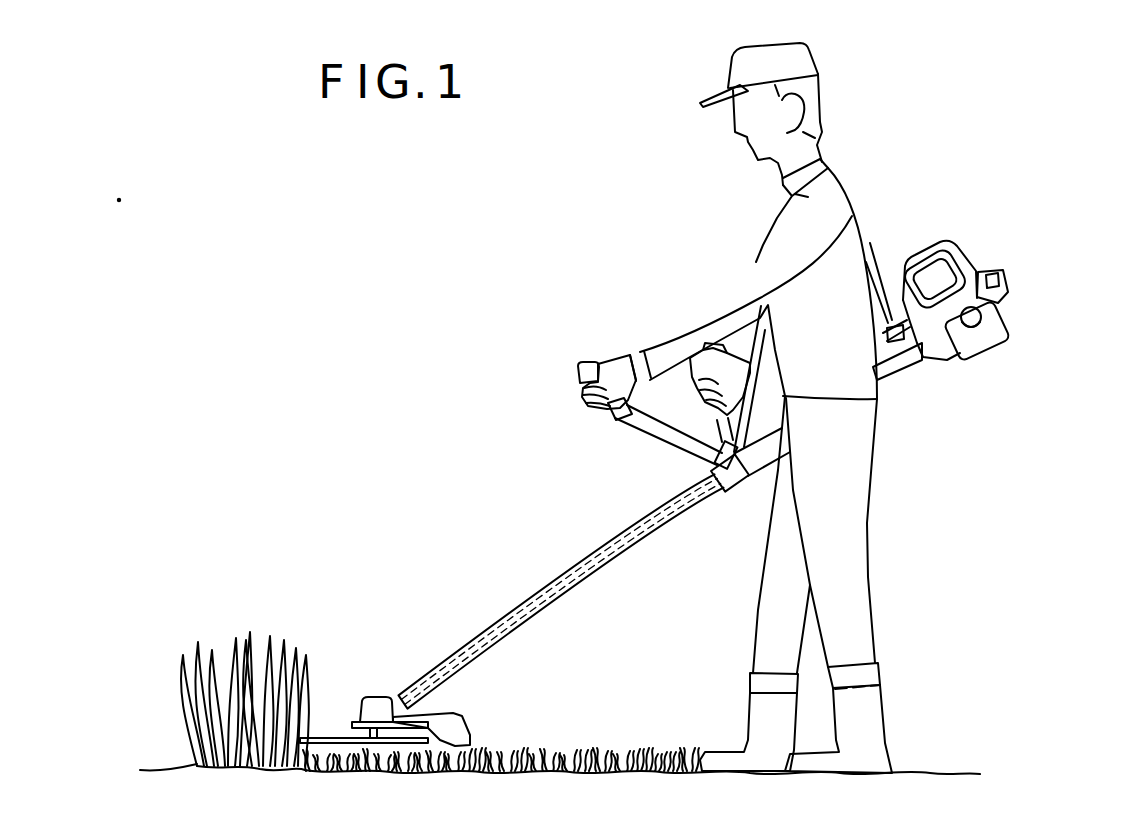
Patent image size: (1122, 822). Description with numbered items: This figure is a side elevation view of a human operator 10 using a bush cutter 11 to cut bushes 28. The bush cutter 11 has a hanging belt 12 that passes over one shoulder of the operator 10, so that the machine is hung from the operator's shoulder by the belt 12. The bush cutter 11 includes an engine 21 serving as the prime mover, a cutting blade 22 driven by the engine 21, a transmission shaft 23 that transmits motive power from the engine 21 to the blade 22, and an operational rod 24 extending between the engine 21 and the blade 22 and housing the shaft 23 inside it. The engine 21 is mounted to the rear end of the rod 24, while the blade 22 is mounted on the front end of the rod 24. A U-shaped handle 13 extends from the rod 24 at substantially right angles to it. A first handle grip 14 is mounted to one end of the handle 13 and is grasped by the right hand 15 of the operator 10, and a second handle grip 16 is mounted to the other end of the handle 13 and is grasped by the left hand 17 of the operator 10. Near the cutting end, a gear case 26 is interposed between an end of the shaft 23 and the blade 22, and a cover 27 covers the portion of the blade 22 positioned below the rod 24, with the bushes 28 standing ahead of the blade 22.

The human operator 10 is at (845, 188).
The bush cutter 11 is at (982, 202).
The hanging belt 12 is at (893, 262).
The U-shaped handle 13 is at (634, 427).
The first handle grip 14 is at (713, 448).
The right hand 15 is at (738, 364).
The second handle grip 16 is at (614, 414).
The left hand 17 is at (610, 372).
The engine 21 is at (975, 248).
The cutting blade 22 is at (334, 737).
The transmission shaft 23 is at (604, 570).
The operational rod 24 is at (518, 608).
The gear case 26 is at (378, 697).
The cover 27 is at (470, 727).
The bushes 28 is at (248, 632).